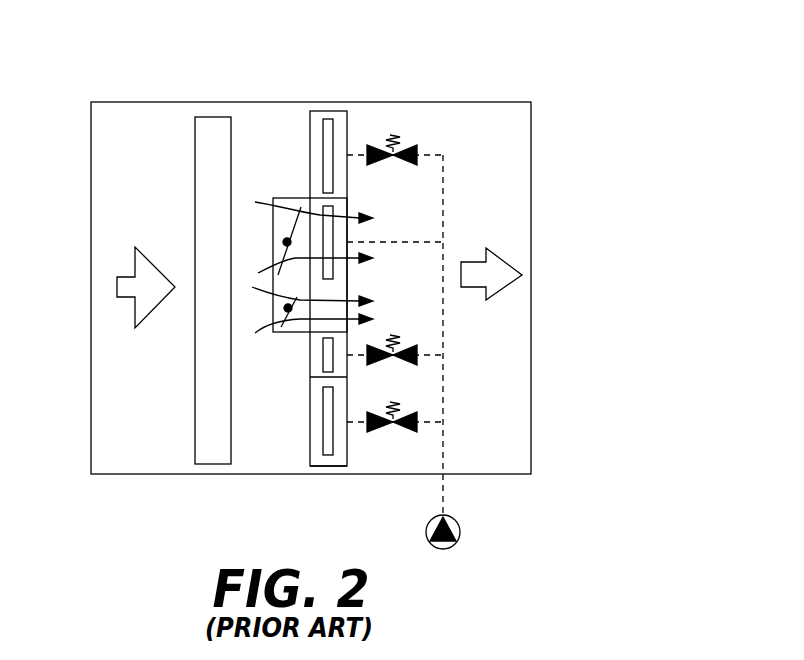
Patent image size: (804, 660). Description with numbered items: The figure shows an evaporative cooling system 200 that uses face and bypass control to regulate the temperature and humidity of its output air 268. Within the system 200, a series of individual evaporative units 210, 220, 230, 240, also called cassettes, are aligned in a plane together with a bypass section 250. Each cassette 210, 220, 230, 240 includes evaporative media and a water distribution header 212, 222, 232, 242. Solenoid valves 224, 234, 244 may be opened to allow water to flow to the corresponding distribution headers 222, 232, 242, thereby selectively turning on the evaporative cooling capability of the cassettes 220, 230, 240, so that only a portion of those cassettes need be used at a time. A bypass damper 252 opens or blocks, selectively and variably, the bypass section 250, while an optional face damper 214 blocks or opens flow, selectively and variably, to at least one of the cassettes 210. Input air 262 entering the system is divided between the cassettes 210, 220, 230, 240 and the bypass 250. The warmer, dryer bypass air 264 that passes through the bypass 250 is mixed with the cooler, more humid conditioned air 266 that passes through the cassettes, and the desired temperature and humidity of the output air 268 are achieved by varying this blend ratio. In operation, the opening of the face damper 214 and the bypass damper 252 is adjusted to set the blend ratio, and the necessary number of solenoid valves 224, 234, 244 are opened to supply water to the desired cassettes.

The evaporative cooling system 200 is at (582, 42).
The evaporative unit 210 is at (314, 197).
The water distribution header 212 is at (327, 235).
The face damper 214 is at (284, 242).
The evaporative unit 220 is at (315, 123).
The water distribution header 222 is at (329, 122).
The solenoid valve 224 is at (420, 143).
The evaporative unit 230 is at (313, 363).
The water distribution header 232 is at (313, 350).
The solenoid valve 234 is at (416, 350).
The evaporative unit 240 is at (321, 455).
The water distribution header 242 is at (326, 456).
The solenoid valve 244 is at (416, 418).
The bypass section 250 is at (335, 310).
The bypass damper 252 is at (280, 335).
The input air 262 is at (127, 277).
The bypass air 264 is at (258, 302).
The conditioned air 266 is at (262, 203).
The output air 268 is at (500, 262).